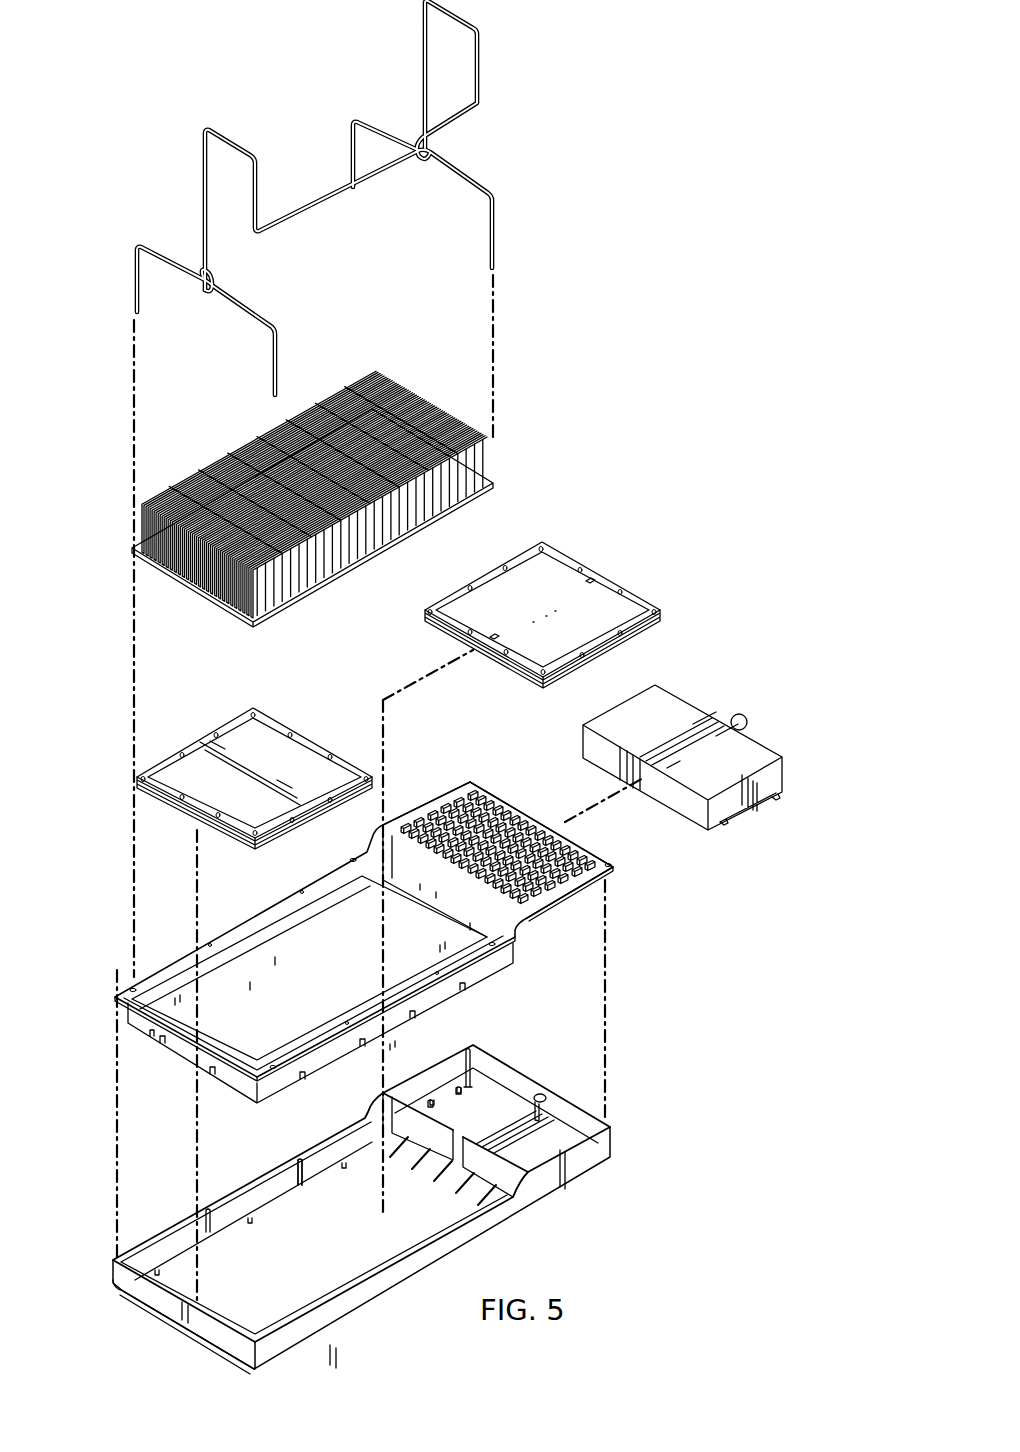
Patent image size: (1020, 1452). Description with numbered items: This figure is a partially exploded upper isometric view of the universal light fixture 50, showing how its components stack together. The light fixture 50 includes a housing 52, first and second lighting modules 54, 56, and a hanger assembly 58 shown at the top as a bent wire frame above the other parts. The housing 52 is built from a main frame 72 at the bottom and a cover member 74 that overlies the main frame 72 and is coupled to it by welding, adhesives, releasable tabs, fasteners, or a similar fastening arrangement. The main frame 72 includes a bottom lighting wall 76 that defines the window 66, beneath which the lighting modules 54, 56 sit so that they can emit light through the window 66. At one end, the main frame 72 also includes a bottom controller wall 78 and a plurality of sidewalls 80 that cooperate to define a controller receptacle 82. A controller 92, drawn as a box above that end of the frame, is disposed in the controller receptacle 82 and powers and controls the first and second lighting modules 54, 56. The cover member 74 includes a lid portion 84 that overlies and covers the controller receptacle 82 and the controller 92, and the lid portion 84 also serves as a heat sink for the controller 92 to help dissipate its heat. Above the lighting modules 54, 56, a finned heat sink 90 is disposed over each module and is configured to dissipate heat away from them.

The universal light fixture 50 is at (645, 111).
The housing 52 is at (506, 790).
The first lighting module 54 is at (601, 552).
The second lighting module 56 is at (318, 727).
The hanger assembly 58 is at (176, 217).
The window 66 is at (283, 1212).
The main frame 72 is at (579, 1194).
The cover member 74 is at (252, 901).
The bottom lighting wall 76 is at (144, 1302).
The bottom controller wall 78 is at (493, 1110).
The sidewalls 80 is at (423, 1077).
The controller receptacle 82 is at (469, 1047).
The lid portion 84 is at (609, 866).
The heat sink 90 is at (249, 426).
The controller 92 is at (694, 694).